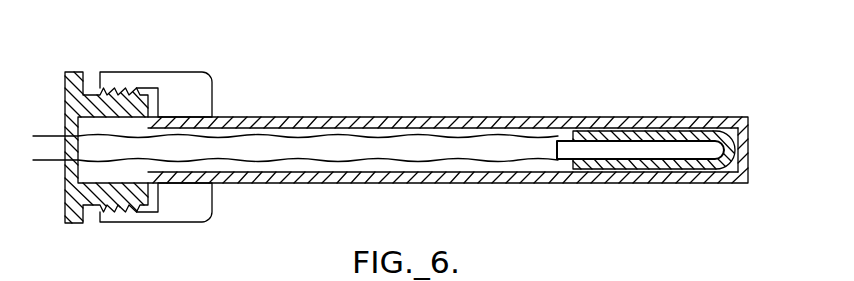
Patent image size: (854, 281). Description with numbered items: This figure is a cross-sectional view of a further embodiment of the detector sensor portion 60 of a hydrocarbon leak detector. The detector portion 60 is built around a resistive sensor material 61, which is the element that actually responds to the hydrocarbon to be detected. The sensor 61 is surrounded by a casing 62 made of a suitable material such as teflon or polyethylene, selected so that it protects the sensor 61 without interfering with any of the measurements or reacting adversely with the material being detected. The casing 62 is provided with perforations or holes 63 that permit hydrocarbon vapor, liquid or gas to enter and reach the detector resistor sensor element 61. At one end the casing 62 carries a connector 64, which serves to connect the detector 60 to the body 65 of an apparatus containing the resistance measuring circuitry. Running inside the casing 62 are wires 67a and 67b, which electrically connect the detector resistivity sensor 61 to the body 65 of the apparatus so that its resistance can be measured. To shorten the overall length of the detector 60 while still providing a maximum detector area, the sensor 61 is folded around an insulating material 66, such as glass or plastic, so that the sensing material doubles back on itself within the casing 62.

The detector sensor portion 60 is at (510, 88).
The resistive sensor material 61 is at (752, 148).
The casing 62 is at (317, 117).
The perforations or holes 63 is at (608, 130).
The connector 64 is at (177, 72).
The body 65 is at (73, 72).
The insulating material 66 is at (673, 150).
The wire 67a is at (378, 134).
The wire 67b is at (373, 162).